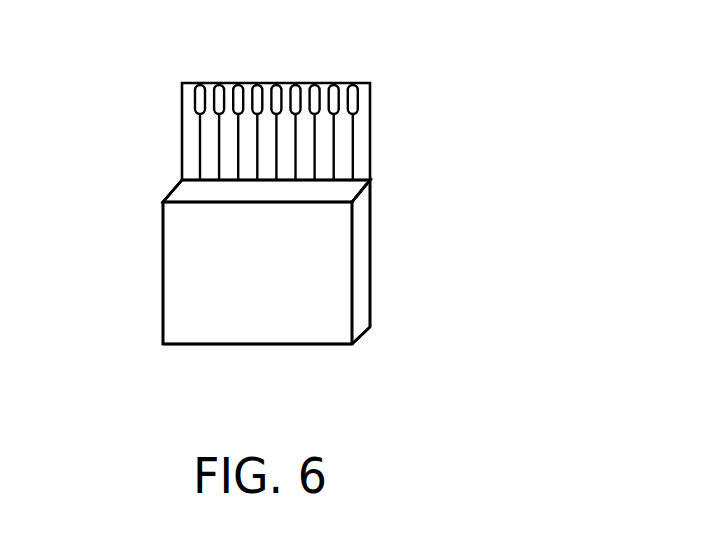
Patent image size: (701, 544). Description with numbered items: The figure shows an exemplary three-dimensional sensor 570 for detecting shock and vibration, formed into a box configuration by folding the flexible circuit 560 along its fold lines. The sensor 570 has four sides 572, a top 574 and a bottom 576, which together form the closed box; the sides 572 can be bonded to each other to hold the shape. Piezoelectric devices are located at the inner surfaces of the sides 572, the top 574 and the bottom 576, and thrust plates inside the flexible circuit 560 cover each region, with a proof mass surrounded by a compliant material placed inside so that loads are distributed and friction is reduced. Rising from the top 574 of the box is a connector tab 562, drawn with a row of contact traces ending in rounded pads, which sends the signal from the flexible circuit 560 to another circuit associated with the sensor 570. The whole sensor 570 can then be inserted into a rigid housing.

The three-dimensional sensor 570 is at (497, 102).
The flexible circuit 560 is at (372, 295).
The connector tab 562 is at (182, 130).
The sides 572 is at (438, 228).
The top 574 is at (332, 192).
The bottom 576 is at (318, 345).